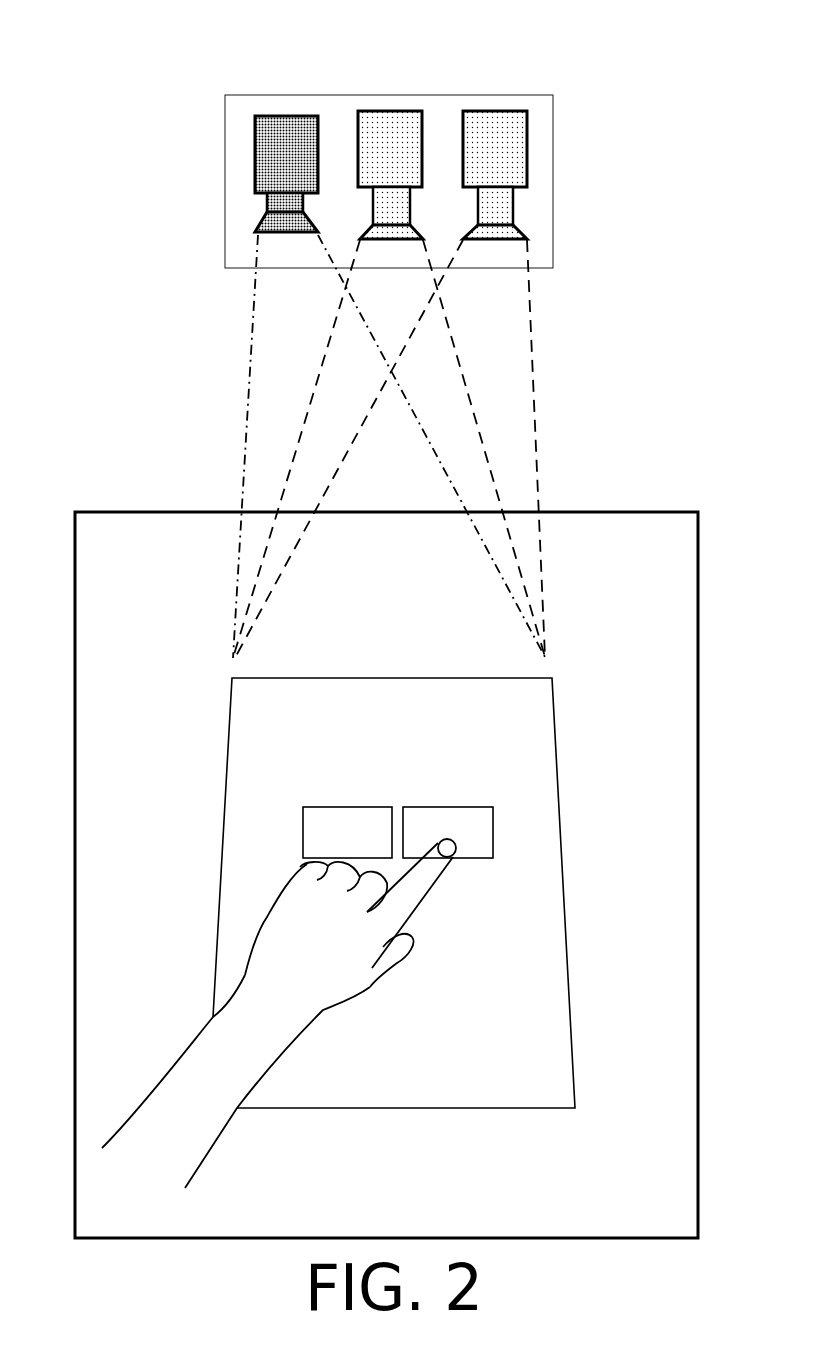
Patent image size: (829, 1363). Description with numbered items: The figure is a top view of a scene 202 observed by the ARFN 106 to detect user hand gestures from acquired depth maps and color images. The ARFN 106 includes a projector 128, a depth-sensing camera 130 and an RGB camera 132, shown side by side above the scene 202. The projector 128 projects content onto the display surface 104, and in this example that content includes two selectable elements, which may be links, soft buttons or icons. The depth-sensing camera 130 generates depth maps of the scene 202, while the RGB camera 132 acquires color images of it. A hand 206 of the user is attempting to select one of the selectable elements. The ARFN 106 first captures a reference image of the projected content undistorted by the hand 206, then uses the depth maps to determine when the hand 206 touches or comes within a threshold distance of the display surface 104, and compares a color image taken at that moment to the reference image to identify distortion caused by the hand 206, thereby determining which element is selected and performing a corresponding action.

The ARFN 106 is at (184, 34).
The projector 128 is at (288, 112).
The depth-sensing camera 130 is at (390, 110).
The RGB camera 132 is at (493, 110).
The scene 202 is at (628, 533).
The display surface 104 is at (415, 707).
The hand 206 is at (368, 978).